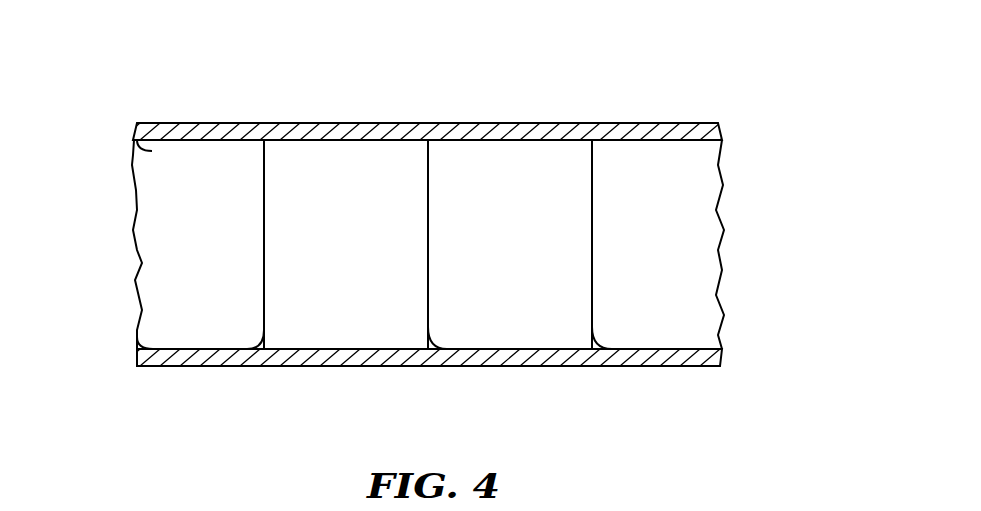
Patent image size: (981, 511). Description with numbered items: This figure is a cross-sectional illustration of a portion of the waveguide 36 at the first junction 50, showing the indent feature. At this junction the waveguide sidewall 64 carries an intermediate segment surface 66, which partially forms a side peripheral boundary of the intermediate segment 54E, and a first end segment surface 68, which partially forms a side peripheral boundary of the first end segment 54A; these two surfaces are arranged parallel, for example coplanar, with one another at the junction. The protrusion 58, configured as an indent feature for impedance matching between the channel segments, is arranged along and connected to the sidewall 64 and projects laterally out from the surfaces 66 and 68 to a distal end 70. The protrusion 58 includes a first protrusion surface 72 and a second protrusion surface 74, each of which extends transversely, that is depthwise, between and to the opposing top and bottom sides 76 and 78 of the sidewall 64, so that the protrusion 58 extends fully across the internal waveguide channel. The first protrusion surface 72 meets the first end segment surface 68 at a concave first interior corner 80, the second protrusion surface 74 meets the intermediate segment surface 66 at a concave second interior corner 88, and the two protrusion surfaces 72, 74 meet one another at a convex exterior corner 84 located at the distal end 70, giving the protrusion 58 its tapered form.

The waveguide 36 is at (626, 72).
The first junction 50 is at (517, 111).
The protrusion 58 is at (407, 136).
The waveguide sidewall 64 is at (685, 122).
The intermediate segment surface 66 is at (160, 257).
The first end segment surface 68 is at (700, 251).
The distal end 70 is at (446, 349).
The first protrusion surface 72 is at (523, 327).
The second protrusion surface 74 is at (345, 325).
The top side of the waveguide sidewall 76 is at (137, 155).
The bottom side of the waveguide sidewall 78 is at (137, 337).
The first interior corner 80 is at (610, 349).
The exterior corner 84 is at (430, 165).
The second interior corner 88 is at (243, 349).
The first end segment 54A is at (708, 176).
The intermediate segment 54E is at (155, 198).